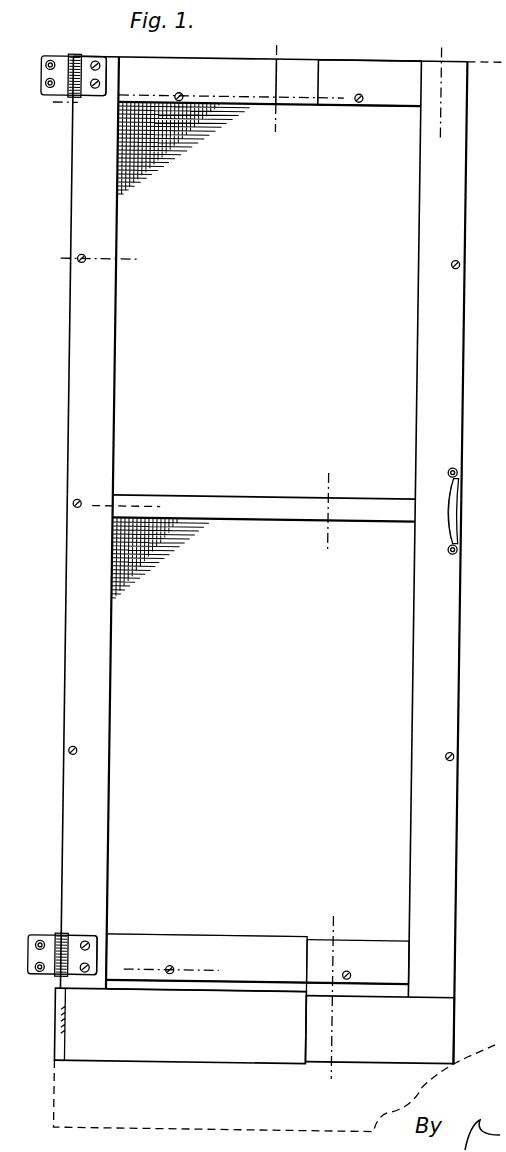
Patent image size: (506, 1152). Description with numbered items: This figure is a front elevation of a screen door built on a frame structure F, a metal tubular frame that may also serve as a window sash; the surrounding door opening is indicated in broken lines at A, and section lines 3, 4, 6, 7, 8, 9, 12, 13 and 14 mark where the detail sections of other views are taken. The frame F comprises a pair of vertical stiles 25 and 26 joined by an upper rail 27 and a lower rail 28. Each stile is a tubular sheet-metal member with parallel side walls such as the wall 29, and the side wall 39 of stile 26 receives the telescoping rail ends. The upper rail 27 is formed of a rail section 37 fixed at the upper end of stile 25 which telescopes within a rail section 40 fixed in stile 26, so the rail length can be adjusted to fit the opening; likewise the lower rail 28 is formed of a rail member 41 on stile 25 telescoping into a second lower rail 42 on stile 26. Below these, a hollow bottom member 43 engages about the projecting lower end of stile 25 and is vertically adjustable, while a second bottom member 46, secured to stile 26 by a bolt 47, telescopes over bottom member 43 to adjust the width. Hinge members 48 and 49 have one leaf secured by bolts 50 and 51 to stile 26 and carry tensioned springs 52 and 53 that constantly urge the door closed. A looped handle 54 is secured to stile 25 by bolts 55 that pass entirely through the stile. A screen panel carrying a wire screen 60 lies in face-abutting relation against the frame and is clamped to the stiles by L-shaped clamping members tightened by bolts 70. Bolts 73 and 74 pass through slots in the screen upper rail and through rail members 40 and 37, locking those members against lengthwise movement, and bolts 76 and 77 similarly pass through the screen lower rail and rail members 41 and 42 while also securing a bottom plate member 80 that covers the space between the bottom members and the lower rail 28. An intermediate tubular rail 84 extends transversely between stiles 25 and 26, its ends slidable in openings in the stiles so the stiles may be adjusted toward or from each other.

The door frame / jamb 3 is at (486, 54).
The section line 4- 4 is at (277, 134).
The section line 6- 6 is at (428, 136).
The section line 7- 7 is at (346, 1080).
The section line 8- 8 is at (321, 548).
The section line 9- 9 is at (160, 501).
The section line 12- 12 is at (335, 90).
The section line 13- 13 is at (140, 254).
The section line 14- 14 is at (226, 964).
The vertical stile 25 is at (445, 325).
The vertical stile 26 is at (77, 319).
The upper rail 27 is at (240, 72).
The lower rail 28 is at (209, 933).
The side wall 29 is at (72, 653).
The rail section 37 is at (350, 72).
The side wall 39 is at (441, 667).
The rail section 40 is at (146, 66).
The rail member 41 is at (370, 954).
The lower rail 42 is at (160, 946).
The bottom member 43 is at (400, 1056).
The bottom member 46 is at (210, 1058).
The bolt 47 is at (62, 1031).
The hinge member 48 is at (73, 78).
The hinge member 49 is at (76, 936).
The bolt 50 is at (90, 64).
The bolt 51 is at (96, 941).
The tensioned spring 52 is at (80, 92).
The tensioned spring 53 is at (68, 936).
The looped handle 54 is at (459, 509).
The bolt 55 is at (458, 549).
The wire screen 60 is at (152, 556).
The bolt 70 is at (458, 756).
The bolt 73 is at (177, 95).
The bolt 74 is at (358, 97).
The bolt 76 is at (358, 974).
The bolt 77 is at (176, 979).
The bottom plate member 80 is at (258, 995).
The intermediate rail 84 is at (234, 505).
The door frame A is at (278, 1085).
The frame structure F is at (450, 635).